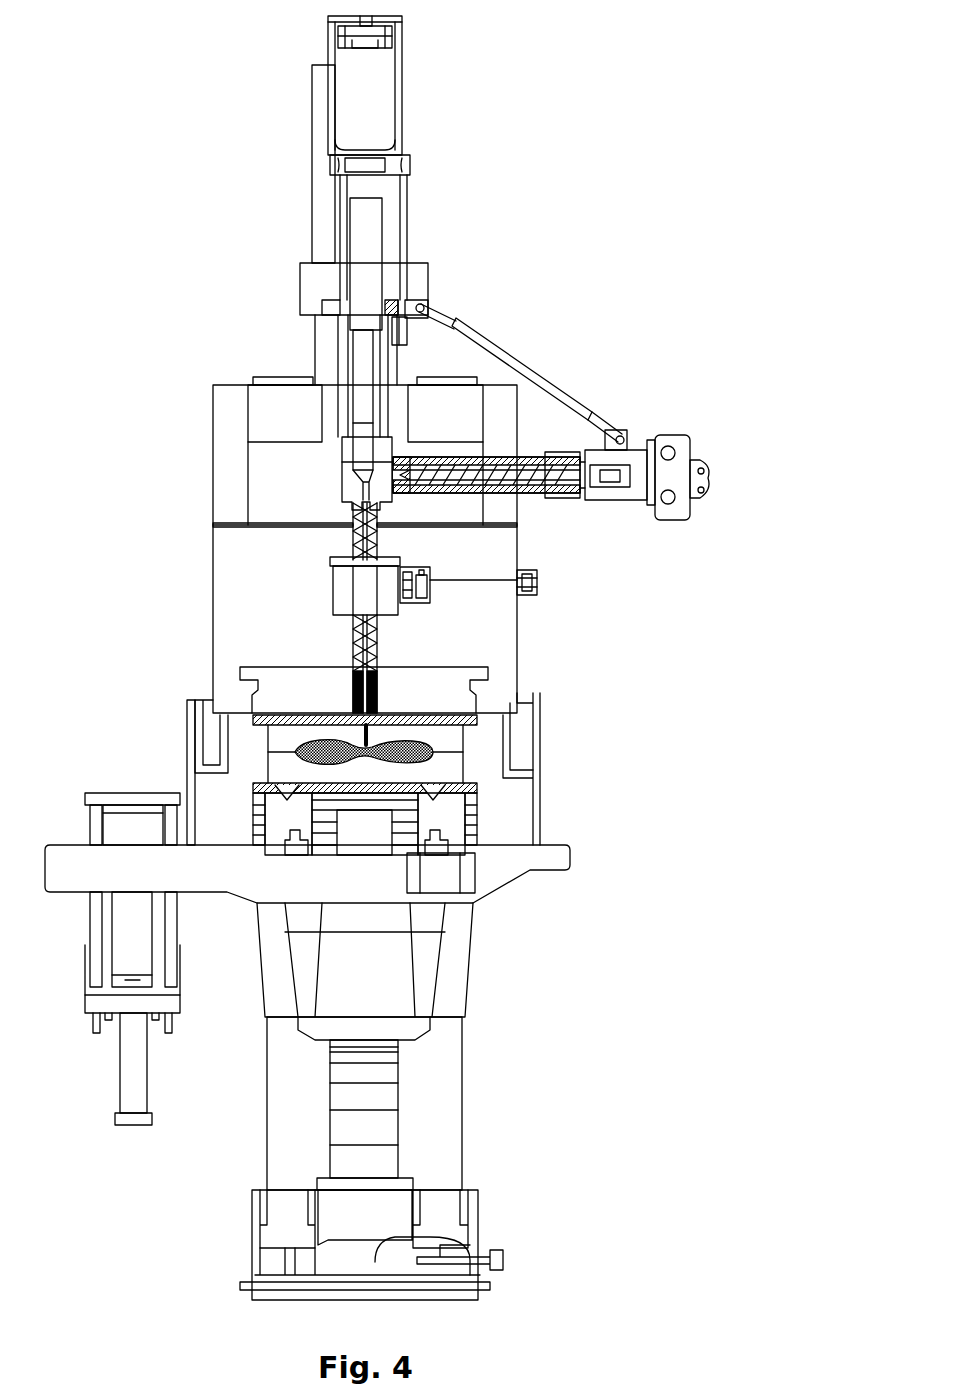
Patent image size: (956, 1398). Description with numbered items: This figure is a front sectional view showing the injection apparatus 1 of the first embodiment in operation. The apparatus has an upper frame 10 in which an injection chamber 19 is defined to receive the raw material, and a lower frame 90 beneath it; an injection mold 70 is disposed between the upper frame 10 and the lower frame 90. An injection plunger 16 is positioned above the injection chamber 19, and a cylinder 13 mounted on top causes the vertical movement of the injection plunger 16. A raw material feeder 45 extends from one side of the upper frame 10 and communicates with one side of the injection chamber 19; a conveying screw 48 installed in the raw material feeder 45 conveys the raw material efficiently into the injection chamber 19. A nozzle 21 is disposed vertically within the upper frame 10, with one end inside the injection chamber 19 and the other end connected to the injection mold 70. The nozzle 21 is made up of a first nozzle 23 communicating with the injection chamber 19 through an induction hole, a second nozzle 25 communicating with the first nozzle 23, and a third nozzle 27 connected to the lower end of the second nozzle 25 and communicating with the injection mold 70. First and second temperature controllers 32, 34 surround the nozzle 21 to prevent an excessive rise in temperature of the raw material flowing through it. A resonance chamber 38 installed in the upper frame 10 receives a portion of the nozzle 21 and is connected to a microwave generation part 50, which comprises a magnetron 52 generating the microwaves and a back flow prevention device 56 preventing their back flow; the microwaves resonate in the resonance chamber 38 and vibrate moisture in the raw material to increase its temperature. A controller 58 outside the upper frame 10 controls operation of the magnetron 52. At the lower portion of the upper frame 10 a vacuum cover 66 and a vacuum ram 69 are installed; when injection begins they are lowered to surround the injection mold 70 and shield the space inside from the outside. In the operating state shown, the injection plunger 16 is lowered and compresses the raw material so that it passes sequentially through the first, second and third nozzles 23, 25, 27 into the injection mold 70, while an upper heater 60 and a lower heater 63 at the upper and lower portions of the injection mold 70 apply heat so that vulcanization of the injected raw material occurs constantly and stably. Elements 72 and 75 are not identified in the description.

The injection apparatus 1 is at (548, 103).
The upper frame 10 is at (188, 372).
The cylinder 13 is at (372, 220).
The injection plunger 16 is at (366, 358).
The injection chamber 19 is at (345, 452).
The nozzle 21 is at (140, 540).
The first nozzle 23 is at (352, 530).
The second nozzle 25 is at (338, 566).
The third nozzle 27 is at (378, 652).
The first temperature controller 32 is at (378, 530).
The second temperature controller 34 is at (378, 652).
The resonance chamber 38 is at (400, 610).
The raw material feeder 45 is at (627, 507).
The conveying screw 48 is at (560, 470).
The microwave generation part 50 is at (430, 560).
The magnetron 52 is at (425, 580).
The back flow prevention device 56 is at (408, 572).
The controller 58 is at (553, 592).
The upper heater 60 is at (253, 720).
The lower heater 63 is at (187, 790).
The vacuum cover 66 is at (540, 730).
The vacuum ram 69 is at (518, 768).
The injection mold 70 is at (620, 800).
The molded article 72 is at (458, 745).
The lower mold plate 75 is at (445, 772).
The lower frame 90 is at (495, 905).